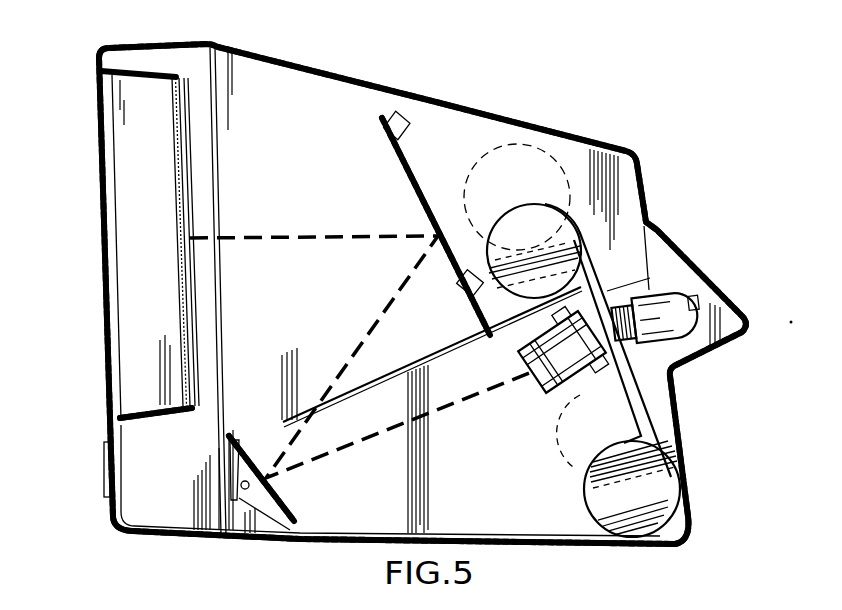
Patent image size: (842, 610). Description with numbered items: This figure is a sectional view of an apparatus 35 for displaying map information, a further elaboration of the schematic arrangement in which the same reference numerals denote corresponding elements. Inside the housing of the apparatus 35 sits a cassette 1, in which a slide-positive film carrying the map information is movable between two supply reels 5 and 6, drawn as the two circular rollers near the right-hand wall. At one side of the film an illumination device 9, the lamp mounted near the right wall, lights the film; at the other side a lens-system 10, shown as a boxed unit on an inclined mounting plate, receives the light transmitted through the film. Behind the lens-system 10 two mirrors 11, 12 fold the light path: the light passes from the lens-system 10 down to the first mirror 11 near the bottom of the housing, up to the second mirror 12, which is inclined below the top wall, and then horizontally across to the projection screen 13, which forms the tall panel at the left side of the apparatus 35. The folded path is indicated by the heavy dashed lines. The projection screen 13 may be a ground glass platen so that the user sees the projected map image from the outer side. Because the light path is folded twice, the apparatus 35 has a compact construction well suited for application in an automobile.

The cassette 1 is at (658, 400).
The supply reel 5 is at (653, 493).
The supply reel 6 is at (560, 228).
The illumination device 9 is at (673, 317).
The lens-system 10 is at (557, 392).
The mirror 11 is at (270, 500).
The mirror 12 is at (396, 154).
The projection screen 13 is at (170, 202).
The apparatus 35 is at (508, 100).